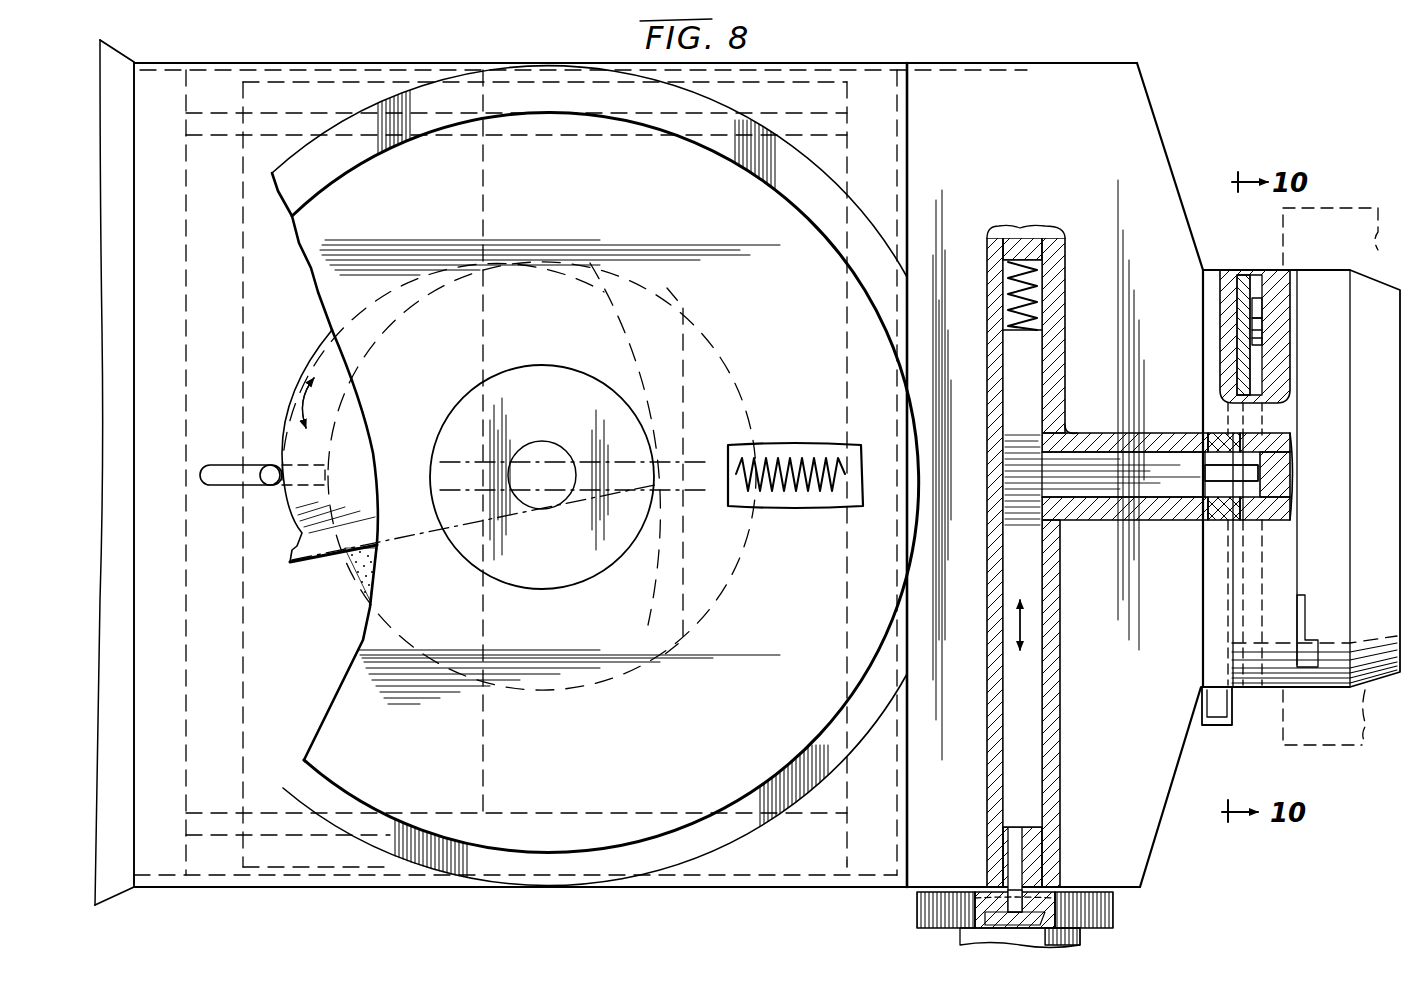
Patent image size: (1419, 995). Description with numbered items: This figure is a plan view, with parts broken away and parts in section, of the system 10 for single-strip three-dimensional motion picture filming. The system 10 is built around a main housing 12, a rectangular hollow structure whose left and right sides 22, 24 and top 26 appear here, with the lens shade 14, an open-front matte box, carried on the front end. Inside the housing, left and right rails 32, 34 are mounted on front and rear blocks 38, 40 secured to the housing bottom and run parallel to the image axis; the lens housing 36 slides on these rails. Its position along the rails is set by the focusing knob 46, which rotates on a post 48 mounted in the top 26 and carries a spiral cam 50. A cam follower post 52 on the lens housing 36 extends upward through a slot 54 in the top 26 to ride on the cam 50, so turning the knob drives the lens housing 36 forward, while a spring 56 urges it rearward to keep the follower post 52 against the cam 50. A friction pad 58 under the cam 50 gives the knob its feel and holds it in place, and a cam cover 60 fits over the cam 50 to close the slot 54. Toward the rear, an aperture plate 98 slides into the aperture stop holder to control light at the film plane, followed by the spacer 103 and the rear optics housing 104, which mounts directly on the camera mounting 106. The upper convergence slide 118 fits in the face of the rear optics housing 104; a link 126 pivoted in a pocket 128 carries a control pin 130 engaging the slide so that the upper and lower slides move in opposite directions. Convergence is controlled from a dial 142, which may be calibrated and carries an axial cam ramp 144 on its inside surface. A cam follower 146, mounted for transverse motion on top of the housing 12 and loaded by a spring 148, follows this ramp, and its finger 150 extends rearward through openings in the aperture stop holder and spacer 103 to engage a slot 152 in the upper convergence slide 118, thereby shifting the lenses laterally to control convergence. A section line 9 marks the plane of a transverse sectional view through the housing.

The system 10 is at (1173, 124).
The main housing 12 is at (645, 890).
The lens shade 14 is at (129, 56).
The left side 22 is at (545, 880).
The right side 24 is at (551, 62).
The top 26 is at (303, 687).
The left rail 32 is at (765, 872).
The right rail 34 is at (275, 121).
The lens housing 36 is at (295, 855).
The front block 38 is at (208, 855).
The rear block 40 is at (876, 82).
The focusing knob 46 is at (548, 367).
The post 48 is at (547, 445).
The spiral cam 50 is at (320, 555).
The cam follower post 52 is at (270, 487).
The slot 54 is at (218, 463).
The spring 56 is at (772, 498).
The friction pad 58 is at (363, 578).
The cam cover 60 is at (388, 870).
The aperture plate 98 is at (1225, 704).
The spacer 103 is at (1238, 370).
The rear optics housing 104 is at (1332, 668).
The camera mounting 106 is at (1326, 213).
The upper convergence slide 118 is at (1240, 297).
The link 126 is at (1270, 336).
The pocket 128 is at (1265, 298).
The control pin 130 is at (1240, 332).
The dial 142 is at (917, 915).
The axial cam ramp 144 is at (1040, 905).
The cam follower 146 is at (1010, 782).
The spring 148 is at (1022, 265).
The finger 150 is at (1232, 438).
The slot 152 is at (1258, 473).
The section line 9- 9 is at (1205, 228).